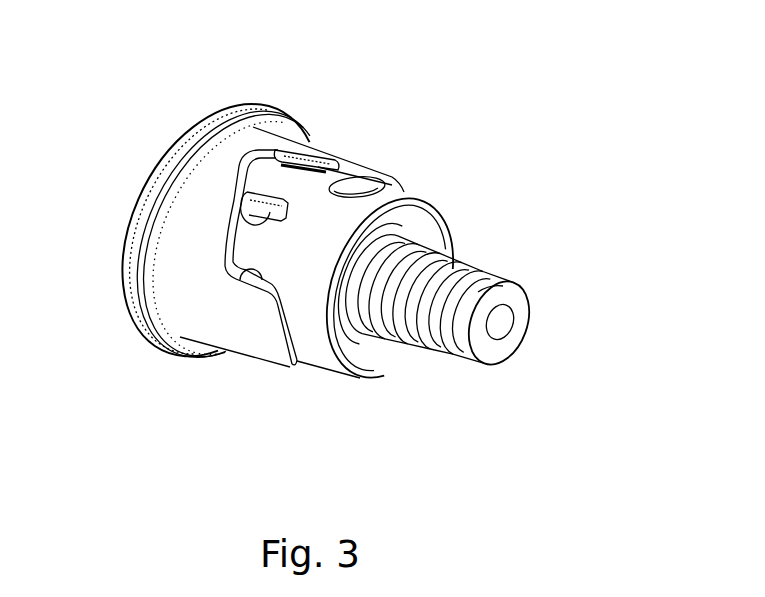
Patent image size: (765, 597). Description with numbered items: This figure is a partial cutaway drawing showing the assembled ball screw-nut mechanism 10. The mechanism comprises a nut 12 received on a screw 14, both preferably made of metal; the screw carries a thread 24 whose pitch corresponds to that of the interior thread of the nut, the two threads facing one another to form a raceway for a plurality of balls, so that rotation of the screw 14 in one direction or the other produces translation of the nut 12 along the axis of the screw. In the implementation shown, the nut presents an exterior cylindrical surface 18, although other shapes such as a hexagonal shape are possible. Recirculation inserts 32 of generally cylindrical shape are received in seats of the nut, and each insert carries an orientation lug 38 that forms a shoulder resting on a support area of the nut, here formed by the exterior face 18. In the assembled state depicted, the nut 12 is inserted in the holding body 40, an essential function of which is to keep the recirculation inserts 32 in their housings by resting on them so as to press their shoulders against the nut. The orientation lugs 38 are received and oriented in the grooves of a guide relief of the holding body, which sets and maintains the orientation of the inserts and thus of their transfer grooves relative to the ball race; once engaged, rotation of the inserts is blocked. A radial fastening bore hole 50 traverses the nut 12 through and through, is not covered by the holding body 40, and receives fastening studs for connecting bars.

The ball screw-nut mechanism 10 is at (170, 79).
The nut 12 is at (326, 378).
The screw 14 is at (520, 313).
The exterior cylindrical surface 18 is at (337, 227).
The thread 24 is at (468, 268).
The recirculation insert 32 is at (246, 211).
The orientation lug 38 is at (293, 160).
The holding body 40 is at (305, 146).
The fastening bore hole 50 is at (357, 186).